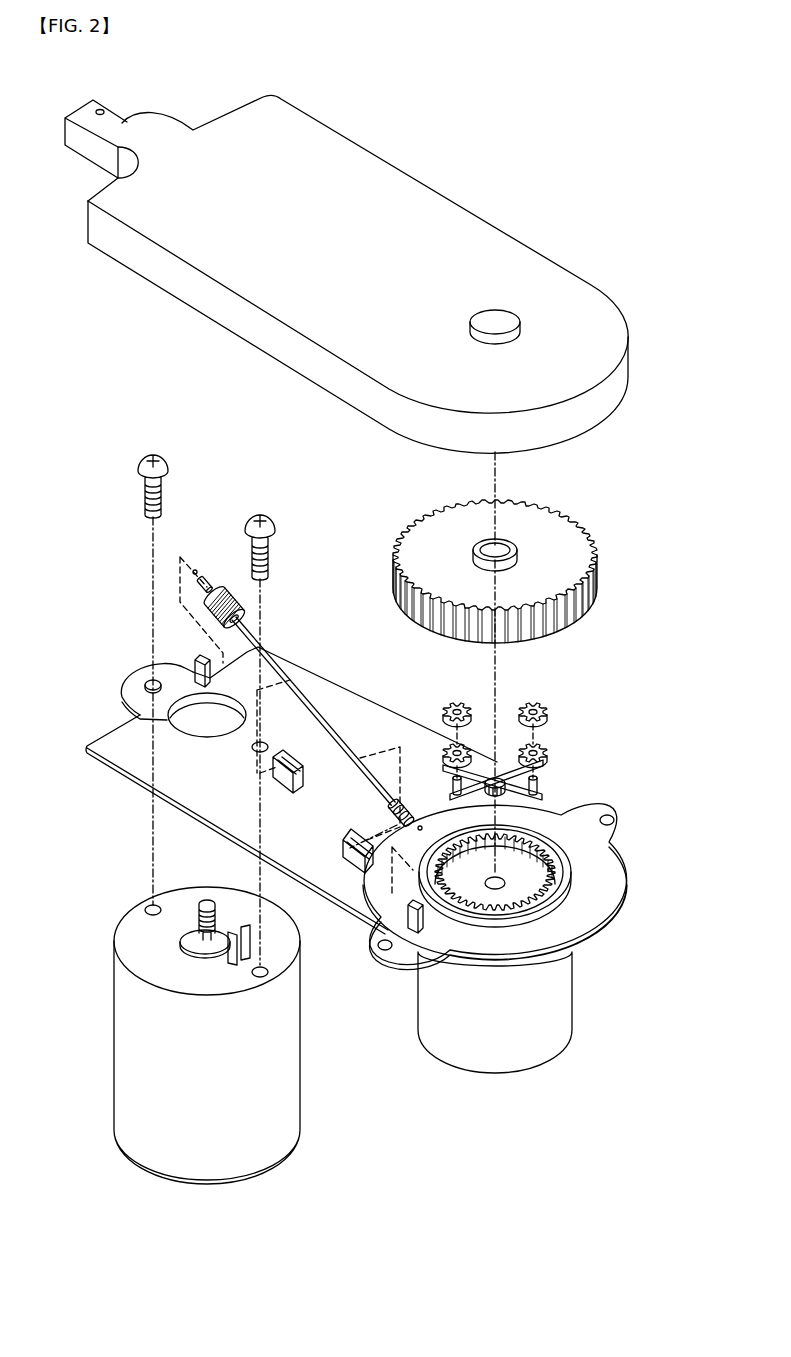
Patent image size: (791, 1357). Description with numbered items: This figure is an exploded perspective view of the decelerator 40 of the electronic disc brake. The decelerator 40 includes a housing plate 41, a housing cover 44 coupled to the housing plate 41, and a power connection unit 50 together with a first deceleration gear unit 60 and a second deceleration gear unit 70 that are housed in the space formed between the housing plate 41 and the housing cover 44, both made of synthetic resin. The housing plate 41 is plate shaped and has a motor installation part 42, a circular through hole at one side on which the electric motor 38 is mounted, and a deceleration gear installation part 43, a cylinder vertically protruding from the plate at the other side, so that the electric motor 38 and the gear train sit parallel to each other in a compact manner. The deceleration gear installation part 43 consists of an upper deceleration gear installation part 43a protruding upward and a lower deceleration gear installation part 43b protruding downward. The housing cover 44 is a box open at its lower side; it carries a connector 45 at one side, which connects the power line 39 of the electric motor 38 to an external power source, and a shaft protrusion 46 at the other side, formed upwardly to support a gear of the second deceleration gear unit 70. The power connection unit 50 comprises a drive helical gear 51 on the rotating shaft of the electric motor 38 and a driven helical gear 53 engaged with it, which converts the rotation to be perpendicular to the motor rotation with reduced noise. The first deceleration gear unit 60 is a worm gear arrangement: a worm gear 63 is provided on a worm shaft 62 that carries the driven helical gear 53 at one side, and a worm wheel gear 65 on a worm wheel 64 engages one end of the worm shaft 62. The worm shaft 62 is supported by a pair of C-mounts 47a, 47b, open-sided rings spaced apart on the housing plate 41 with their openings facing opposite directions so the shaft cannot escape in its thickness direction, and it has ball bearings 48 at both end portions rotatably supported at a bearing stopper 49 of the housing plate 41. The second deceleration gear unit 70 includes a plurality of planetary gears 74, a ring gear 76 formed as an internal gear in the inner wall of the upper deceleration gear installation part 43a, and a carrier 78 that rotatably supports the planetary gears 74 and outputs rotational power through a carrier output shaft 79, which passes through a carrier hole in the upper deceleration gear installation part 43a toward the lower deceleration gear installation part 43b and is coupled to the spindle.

The electric motor 38 is at (123, 1028).
The power line 39 is at (247, 942).
The decelerator 40 is at (528, 151).
The housing plate 41 is at (112, 748).
The motor installation part 42 is at (140, 712).
The deceleration gear installation part 43 is at (660, 938).
The upper deceleration gear installation part 43a is at (550, 905).
The lower deceleration gear installation part 43b is at (547, 1003).
The housing cover 44 is at (436, 226).
The connector 45 is at (88, 152).
The shaft protrusion 46 is at (497, 313).
The C-mount 47a is at (273, 778).
The C-mount 47b is at (347, 858).
The ball bearings 48 is at (195, 570).
The bearing stopper 49 is at (195, 665).
The power connection unit 50 is at (172, 882).
The drive helical gear 51 is at (197, 912).
The driven helical gear 53 is at (232, 591).
The first deceleration gear unit 60 is at (329, 521).
The worm shaft 62 is at (320, 713).
The worm gear 63 is at (407, 803).
The worm wheel 64 is at (442, 531).
The worm wheel gear 65 is at (588, 608).
The second deceleration gear unit 70 is at (586, 764).
The planetary gears 74 is at (545, 743).
The ring gear 76 is at (543, 842).
The carrier 78 is at (540, 795).
The carrier output shaft 79 is at (503, 797).